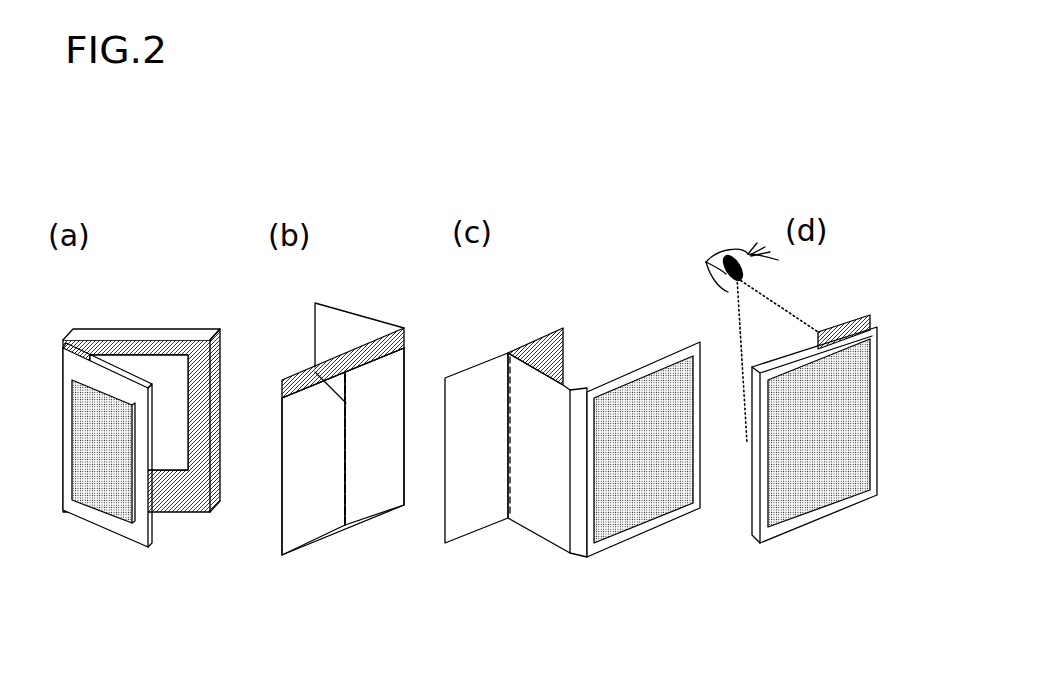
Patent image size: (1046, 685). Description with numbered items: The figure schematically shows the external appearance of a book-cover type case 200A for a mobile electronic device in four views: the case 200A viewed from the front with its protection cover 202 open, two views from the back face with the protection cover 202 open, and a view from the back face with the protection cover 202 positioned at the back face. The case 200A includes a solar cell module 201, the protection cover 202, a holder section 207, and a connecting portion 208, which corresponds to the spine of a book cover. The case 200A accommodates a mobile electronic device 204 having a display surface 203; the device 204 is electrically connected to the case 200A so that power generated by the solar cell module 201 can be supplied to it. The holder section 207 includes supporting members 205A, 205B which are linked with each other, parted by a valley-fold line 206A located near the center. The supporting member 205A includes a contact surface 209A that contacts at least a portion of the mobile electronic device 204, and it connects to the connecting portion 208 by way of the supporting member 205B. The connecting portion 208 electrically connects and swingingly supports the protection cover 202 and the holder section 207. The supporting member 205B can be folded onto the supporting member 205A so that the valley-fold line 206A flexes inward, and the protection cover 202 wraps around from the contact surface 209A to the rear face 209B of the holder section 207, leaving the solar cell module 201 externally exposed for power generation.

The case for a mobile electronic device 200A is at (413, 176).
The solar cell module 201 is at (125, 505).
The protection cover 202 is at (145, 542).
The display surface 203 is at (157, 370).
The mobile electronic device 204 is at (190, 477).
The supporting member 205A is at (310, 530).
The supporting member 205B is at (382, 503).
The valley-fold line 206A is at (307, 370).
The holder section 207 is at (277, 533).
The connecting portion 208 is at (578, 538).
The contact surface 209A is at (476, 357).
The rear face 209B is at (461, 521).